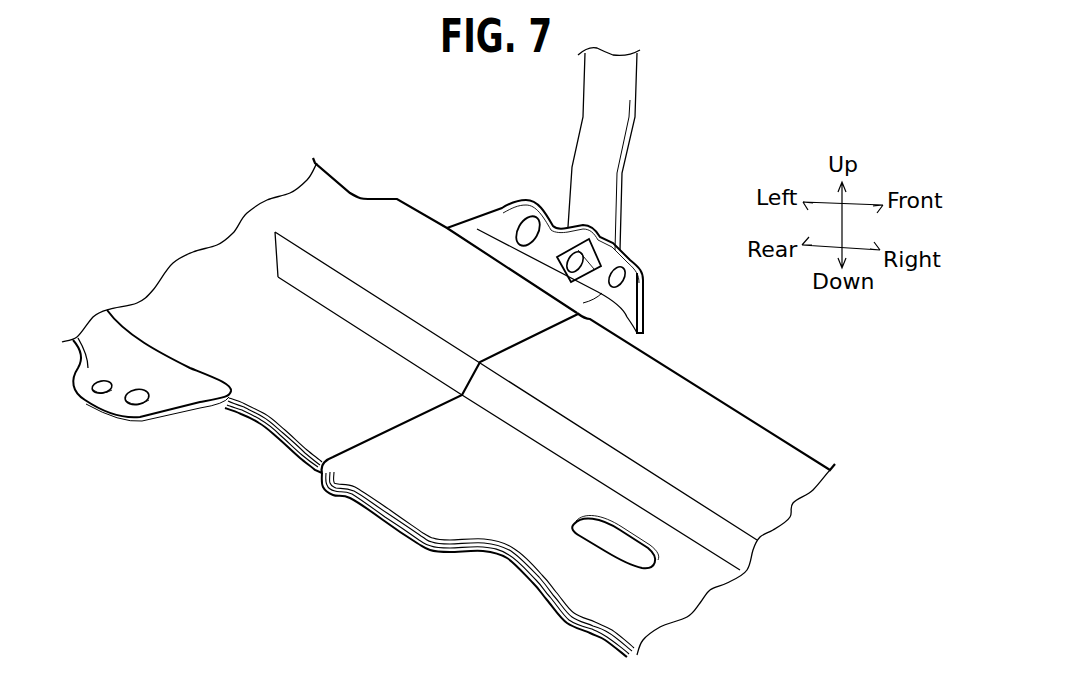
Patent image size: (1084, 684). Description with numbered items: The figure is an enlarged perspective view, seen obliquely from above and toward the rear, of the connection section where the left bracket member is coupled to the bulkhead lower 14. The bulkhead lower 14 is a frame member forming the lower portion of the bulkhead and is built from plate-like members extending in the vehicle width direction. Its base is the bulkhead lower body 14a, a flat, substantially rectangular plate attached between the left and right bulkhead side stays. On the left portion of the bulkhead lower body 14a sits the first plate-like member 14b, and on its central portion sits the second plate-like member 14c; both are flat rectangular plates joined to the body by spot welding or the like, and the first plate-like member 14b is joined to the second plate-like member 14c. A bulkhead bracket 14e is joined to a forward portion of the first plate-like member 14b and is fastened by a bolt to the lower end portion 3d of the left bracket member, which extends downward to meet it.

The lower end portion 3d is at (613, 210).
The bulkhead lower 14 is at (312, 515).
The bulkhead lower body 14a is at (287, 440).
The first plate-like member 14b is at (348, 212).
The second plate-like member 14c is at (717, 427).
The bulkhead bracket 14e is at (504, 213).